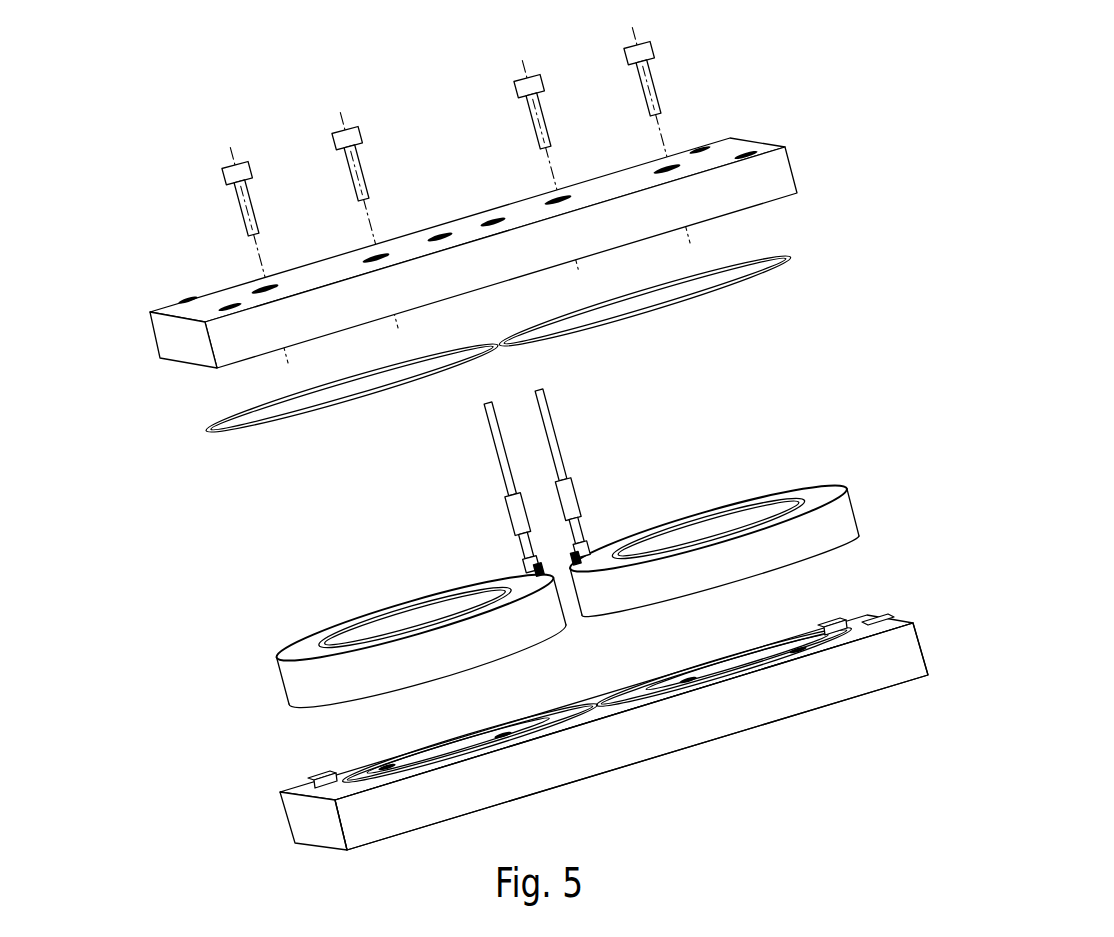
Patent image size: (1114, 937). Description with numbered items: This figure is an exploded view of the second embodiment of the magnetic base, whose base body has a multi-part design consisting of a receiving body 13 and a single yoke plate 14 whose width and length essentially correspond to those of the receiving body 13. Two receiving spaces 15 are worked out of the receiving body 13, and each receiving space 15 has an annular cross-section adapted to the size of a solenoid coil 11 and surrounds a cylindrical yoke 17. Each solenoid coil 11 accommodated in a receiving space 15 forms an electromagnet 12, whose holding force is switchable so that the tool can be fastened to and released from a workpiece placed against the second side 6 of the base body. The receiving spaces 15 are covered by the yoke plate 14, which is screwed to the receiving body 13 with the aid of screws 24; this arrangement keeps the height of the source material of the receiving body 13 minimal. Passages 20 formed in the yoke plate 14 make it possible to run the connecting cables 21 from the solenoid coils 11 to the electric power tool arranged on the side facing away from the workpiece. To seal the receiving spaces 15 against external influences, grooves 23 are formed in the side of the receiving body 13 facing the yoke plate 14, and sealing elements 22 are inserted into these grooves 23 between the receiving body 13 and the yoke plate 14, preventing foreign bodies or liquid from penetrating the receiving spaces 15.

The second side 6 is at (697, 743).
The solenoid coil 11 is at (327, 668).
The electromagnet 12 is at (712, 544).
The receiving body 13 is at (313, 812).
The yoke plate 14 is at (777, 169).
The receiving space 15 is at (880, 620).
The cylindrical yoke 17 is at (750, 663).
The passage 20 is at (493, 220).
The connecting cable 21 is at (565, 453).
The sealing element 22 is at (780, 272).
The groove 23 is at (847, 647).
The screw 24 is at (660, 82).